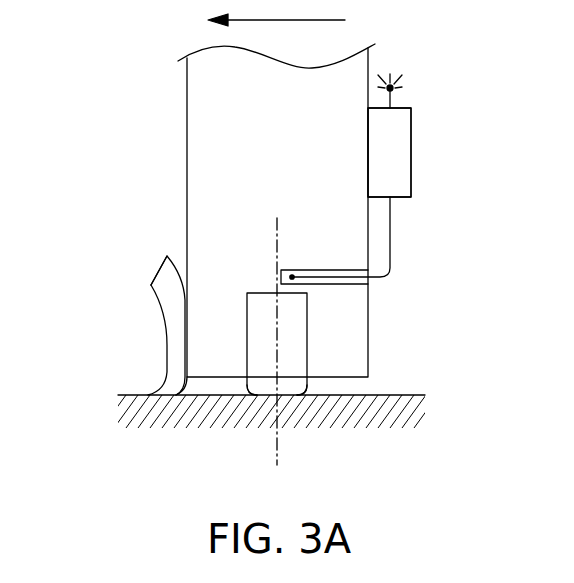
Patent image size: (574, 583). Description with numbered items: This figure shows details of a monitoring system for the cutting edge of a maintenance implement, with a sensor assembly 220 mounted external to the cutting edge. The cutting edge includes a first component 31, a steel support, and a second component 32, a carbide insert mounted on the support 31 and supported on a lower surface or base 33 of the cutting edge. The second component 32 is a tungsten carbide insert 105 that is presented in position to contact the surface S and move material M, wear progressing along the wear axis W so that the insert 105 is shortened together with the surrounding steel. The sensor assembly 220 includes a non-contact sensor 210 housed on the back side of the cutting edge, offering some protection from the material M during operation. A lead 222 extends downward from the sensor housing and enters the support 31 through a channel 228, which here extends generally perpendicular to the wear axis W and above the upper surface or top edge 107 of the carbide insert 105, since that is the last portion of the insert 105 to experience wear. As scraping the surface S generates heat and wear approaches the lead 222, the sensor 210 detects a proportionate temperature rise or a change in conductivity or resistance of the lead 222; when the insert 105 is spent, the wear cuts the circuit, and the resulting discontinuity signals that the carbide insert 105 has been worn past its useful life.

The first component 31 is at (207, 131).
The second component 32 is at (271, 298).
The base 33 is at (305, 388).
The tungsten carbide insert 105 is at (263, 380).
The top edge 107 is at (253, 291).
The sensor 210 is at (392, 175).
The sensor assembly 220 is at (418, 136).
The lead 222 is at (392, 235).
The channel 228 is at (330, 270).
The material M is at (168, 322).
The surface S is at (132, 395).
The wear axis W is at (278, 443).